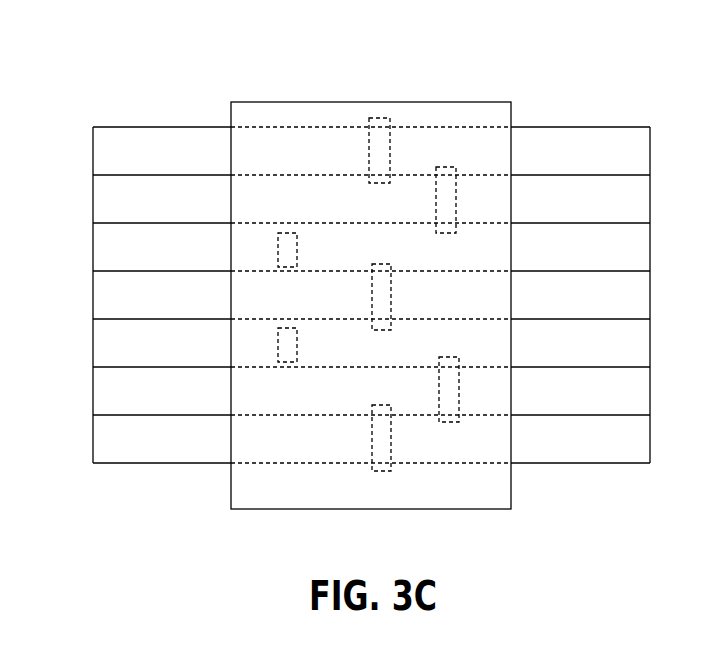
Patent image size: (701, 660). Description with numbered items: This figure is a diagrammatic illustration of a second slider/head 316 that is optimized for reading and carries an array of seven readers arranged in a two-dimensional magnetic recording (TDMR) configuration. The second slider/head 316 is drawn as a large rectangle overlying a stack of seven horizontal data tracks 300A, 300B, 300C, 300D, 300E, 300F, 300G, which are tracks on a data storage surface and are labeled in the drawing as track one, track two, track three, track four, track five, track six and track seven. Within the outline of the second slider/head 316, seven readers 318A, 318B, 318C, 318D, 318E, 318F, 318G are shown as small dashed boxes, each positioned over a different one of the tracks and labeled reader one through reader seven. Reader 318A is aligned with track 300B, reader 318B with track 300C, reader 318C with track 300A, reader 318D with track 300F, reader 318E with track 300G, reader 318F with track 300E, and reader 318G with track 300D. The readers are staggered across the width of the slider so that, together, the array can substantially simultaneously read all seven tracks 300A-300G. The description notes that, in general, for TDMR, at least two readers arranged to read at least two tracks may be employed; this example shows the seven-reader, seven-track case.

The second slider/head 316 is at (495, 110).
The track 300A is at (103, 307).
The track 300B is at (103, 259).
The track 300C is at (103, 355).
The track 300D is at (103, 404).
The track 300E is at (103, 211).
The track 300F is at (103, 163).
The track 300G is at (103, 451).
The reader 318A is at (287, 256).
The reader 318B is at (287, 351).
The reader 318C is at (380, 307).
The reader 318D is at (378, 148).
The reader 318E is at (380, 455).
The reader 318F is at (450, 207).
The reader 318G is at (447, 403).